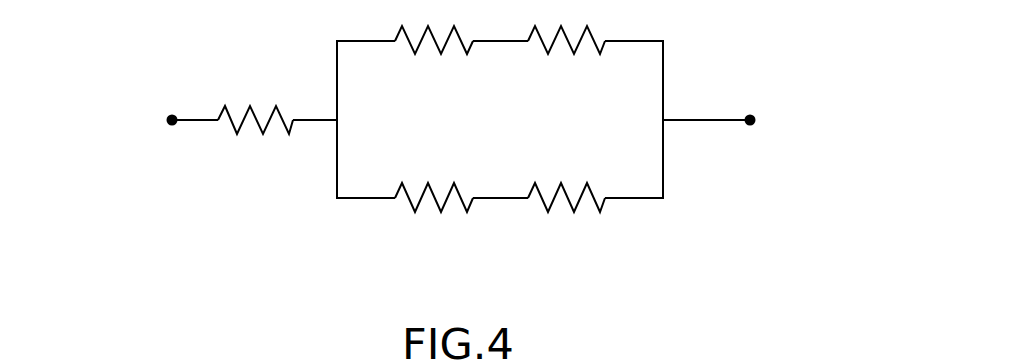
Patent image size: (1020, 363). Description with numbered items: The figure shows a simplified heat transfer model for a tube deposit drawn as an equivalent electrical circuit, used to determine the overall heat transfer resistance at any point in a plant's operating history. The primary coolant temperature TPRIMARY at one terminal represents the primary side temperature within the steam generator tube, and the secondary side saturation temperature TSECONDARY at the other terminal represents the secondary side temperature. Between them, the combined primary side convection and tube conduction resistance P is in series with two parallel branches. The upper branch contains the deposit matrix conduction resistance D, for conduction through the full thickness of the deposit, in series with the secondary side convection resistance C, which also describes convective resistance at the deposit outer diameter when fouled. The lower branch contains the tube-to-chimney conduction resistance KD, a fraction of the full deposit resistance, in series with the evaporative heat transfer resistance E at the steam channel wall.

The primary coolant temperature TPRIMARY is at (142, 129).
The secondary side saturation temperature TSECONDARY is at (768, 129).
The primary side convection and tube conduction resistance P is at (277, 139).
The deposit matrix conduction resistance D is at (434, 61).
The secondary side convection resistance C is at (566, 61).
The tube-to-chimney conduction resistance KD is at (434, 218).
The evaporative heat transfer resistance E is at (566, 218).